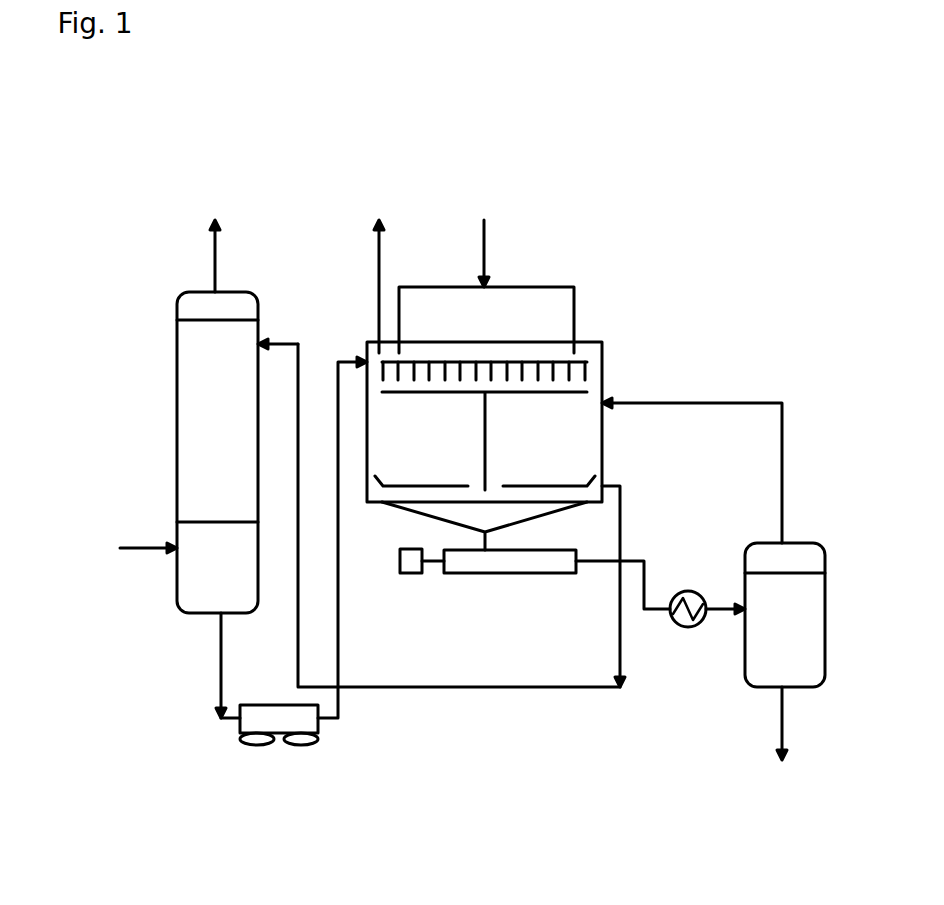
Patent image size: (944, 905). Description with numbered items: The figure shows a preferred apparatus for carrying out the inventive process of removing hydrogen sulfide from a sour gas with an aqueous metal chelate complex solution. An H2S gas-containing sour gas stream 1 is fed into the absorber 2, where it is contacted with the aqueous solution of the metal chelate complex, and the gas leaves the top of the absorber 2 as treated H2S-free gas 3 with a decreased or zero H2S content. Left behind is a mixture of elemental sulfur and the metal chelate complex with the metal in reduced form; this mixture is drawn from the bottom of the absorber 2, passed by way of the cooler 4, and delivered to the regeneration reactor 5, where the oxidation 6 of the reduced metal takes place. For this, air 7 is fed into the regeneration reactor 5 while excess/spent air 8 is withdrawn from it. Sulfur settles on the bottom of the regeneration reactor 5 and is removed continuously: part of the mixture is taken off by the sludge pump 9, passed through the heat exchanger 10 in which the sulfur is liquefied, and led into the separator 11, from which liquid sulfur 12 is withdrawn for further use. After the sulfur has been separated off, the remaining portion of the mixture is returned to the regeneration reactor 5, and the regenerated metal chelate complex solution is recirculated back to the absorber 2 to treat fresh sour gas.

The sour gas stream 1 is at (148, 533).
The absorber 2 is at (188, 389).
The treated H2S-free gas 3 is at (203, 256).
The cooler 4 is at (303, 722).
The regeneration reactor 5 is at (584, 435).
The oxidation 6 is at (486, 320).
The air 7 is at (472, 253).
The excess/spent air 8 is at (366, 286).
The sludge pump 9 is at (484, 562).
The heat exchanger 10 is at (690, 592).
The separator 11 is at (807, 593).
The liquid sulfur 12 is at (764, 723).